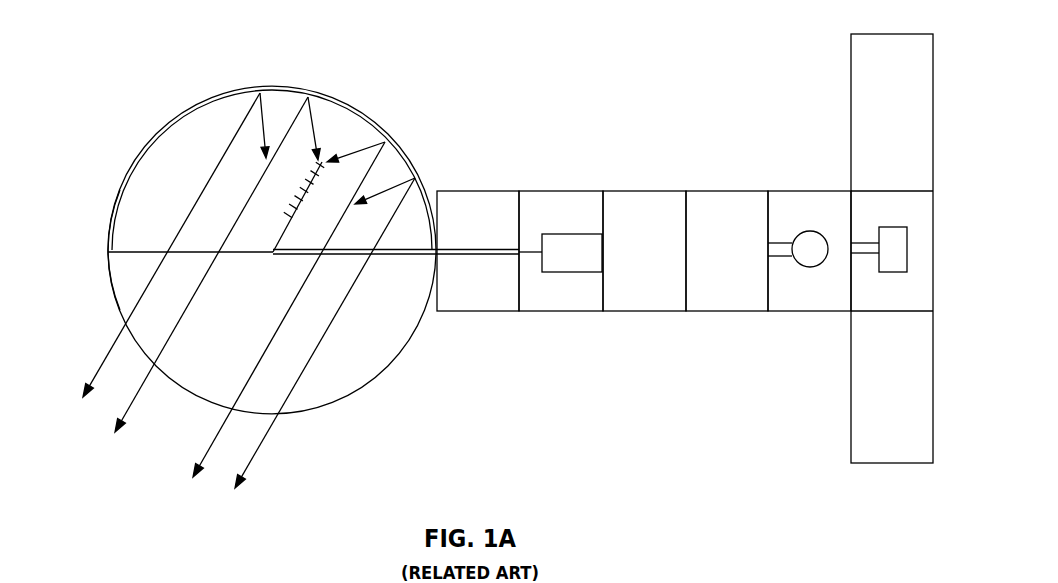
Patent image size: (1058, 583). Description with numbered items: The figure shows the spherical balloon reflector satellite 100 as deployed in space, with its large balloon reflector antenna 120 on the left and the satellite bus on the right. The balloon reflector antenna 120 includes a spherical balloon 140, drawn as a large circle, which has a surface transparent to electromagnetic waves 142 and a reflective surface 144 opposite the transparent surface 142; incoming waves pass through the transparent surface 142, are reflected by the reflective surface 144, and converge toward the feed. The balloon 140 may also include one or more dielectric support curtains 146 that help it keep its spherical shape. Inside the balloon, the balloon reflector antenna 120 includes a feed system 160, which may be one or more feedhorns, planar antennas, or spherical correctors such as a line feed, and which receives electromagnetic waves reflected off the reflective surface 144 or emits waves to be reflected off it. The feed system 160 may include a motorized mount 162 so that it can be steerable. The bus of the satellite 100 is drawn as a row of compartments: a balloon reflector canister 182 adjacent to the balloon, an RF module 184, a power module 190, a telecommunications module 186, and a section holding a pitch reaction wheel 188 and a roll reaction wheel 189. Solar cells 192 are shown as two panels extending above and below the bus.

The spherical balloon reflector satellite 100 is at (636, 51).
The balloon reflector antenna 120 is at (375, 117).
The spherical balloon 140 is at (68, 183).
The surface transparent to electromagnetic waves 142 is at (113, 297).
The reflective surface 144 is at (108, 228).
The dielectric support curtain 146 is at (140, 252).
The feed system 160 is at (287, 218).
The motorized mount 162 is at (272, 255).
The balloon reflector canister 182 is at (467, 197).
The RF module 184 is at (560, 197).
The telecommunications module 186 is at (726, 195).
The pitch reaction wheel 188 is at (803, 230).
The roll reaction wheel 189 is at (888, 273).
The power module 190 is at (641, 195).
The solar cells 192 is at (864, 50).